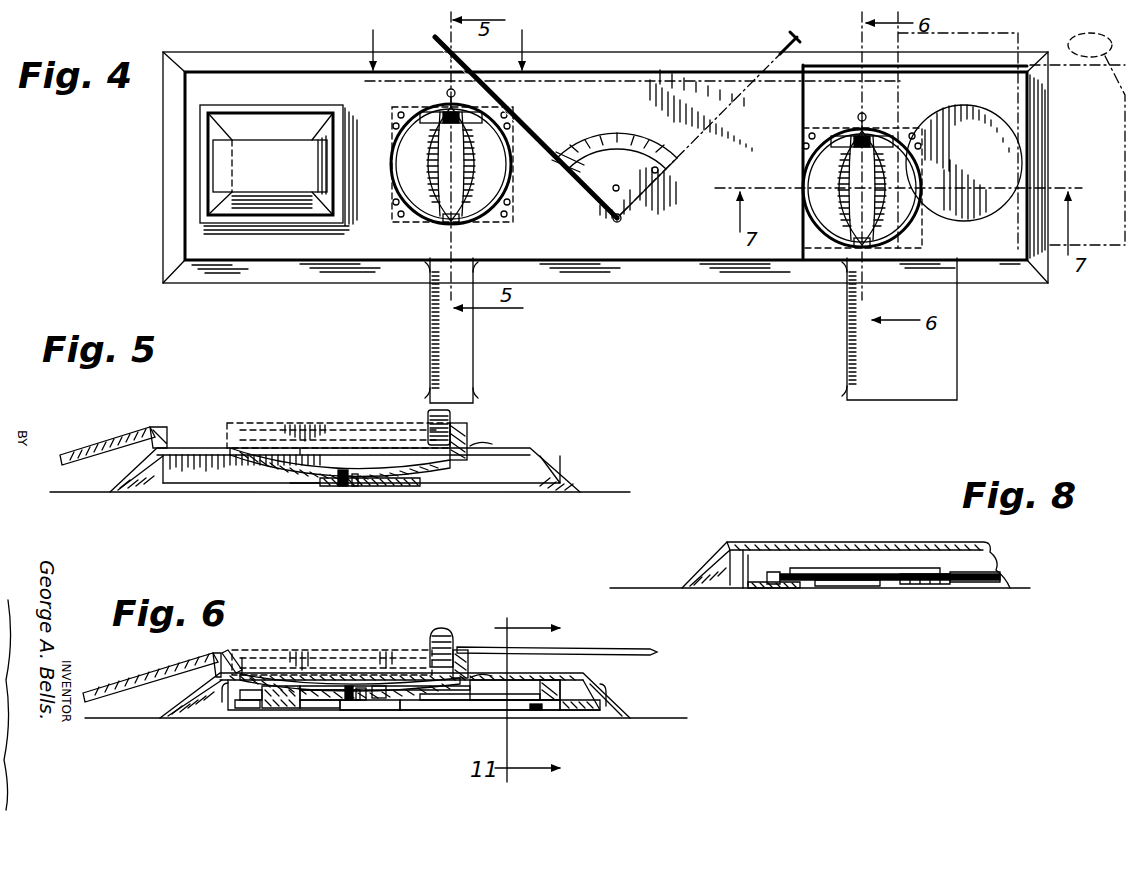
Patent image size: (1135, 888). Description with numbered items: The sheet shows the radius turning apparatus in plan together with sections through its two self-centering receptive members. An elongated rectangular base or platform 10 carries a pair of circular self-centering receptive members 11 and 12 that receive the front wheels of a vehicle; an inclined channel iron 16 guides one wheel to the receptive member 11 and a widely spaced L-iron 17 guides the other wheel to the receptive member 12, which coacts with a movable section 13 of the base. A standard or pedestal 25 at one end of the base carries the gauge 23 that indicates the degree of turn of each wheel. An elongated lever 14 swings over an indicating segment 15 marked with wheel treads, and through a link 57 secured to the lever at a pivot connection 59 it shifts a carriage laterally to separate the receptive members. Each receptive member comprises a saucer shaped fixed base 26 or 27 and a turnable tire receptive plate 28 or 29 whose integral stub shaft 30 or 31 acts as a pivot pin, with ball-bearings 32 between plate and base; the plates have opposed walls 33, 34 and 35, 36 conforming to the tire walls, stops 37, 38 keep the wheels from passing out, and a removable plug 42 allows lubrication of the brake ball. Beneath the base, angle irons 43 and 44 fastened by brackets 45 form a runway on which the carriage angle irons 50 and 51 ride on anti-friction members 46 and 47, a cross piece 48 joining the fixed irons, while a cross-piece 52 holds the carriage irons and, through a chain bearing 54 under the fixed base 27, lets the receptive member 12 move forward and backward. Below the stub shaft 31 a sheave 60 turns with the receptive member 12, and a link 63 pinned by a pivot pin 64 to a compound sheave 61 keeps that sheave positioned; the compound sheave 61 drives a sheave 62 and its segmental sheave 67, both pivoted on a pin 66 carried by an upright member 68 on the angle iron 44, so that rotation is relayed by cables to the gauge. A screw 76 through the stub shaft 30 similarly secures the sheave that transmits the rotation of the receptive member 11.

In FIG. 4, the base 10 is at (172, 209).
In FIG. 5, the base 10 is at (172, 452).
In FIG. 6, the base 10 is at (182, 696).
In FIG. 8, the base 10 is at (712, 562).
In FIG. 4, the receptive member 11 is at (437, 156).
In FIG. 5, the receptive member 11 is at (380, 422).
In FIG. 6, the receptive member 11 is at (475, 660).
In FIG. 4, the receptive member 12 is at (847, 156).
In FIG. 6, the receptive member 12 is at (462, 650).
In FIG. 4, the movable section 13 is at (814, 42).
In FIG. 4, the lever 14 is at (437, 44).
In FIG. 6, the lever 14 is at (612, 646).
In FIG. 4, the indicating segment 15 is at (613, 135).
In FIG. 4, the inclined channel iron 16 is at (478, 345).
In FIG. 5, the inclined channel iron 16 is at (70, 448).
In FIG. 4, the L-iron 17 is at (846, 355).
In FIG. 6, the L-iron 17 is at (110, 672).
In FIG. 4, the gauge 23 is at (274, 173).
In FIG. 4, the pedestal 25 is at (262, 120).
In FIG. 5, the fixed base 26 is at (290, 478).
In FIG. 6, the fixed base 27 is at (405, 690).
In FIG. 5, the tire receptive plate 28 is at (255, 452).
In FIG. 6, the tire receptive plate 29 is at (262, 676).
In FIG. 5, the stub shaft 30 is at (340, 486).
In FIG. 6, the stub shaft 31 is at (345, 712).
In FIG. 5, the ball-bearings 32 is at (467, 440).
In FIG. 6, the ball-bearings 32 is at (228, 653).
In FIG. 4, the opposed wall 33 is at (426, 164).
In FIG. 5, the opposed wall 33 is at (320, 423).
In FIG. 4, the opposed wall 34 is at (475, 178).
In FIG. 4, the opposed wall 35 is at (812, 232).
In FIG. 6, the opposed wall 35 is at (246, 658).
In FIG. 4, the opposed wall 36 is at (905, 232).
In FIG. 4, the stop 37 is at (432, 112).
In FIG. 5, the stop 37 is at (450, 422).
In FIG. 4, the stop 38 is at (852, 136).
In FIG. 6, the stop 38 is at (440, 628).
In FIG. 5, the removable plug 42 is at (500, 446).
In FIG. 6, the removable plug 42 is at (492, 676).
In FIG. 6, the angle iron 43 is at (268, 708).
In FIG. 6, the angle iron 44 is at (570, 712).
In FIG. 8, the angle iron 44 is at (770, 588).
In FIG. 6, the bracket 45 is at (215, 690).
In FIG. 8, the bracket 45 is at (737, 565).
In FIG. 6, the anti-friction member 46 is at (246, 702).
In FIG. 6, the anti-friction member 47 is at (538, 712).
In FIG. 6, the cross piece 48 is at (452, 712).
In FIG. 6, the angle iron 50 is at (237, 706).
In FIG. 6, the angle iron 51 is at (546, 688).
In FIG. 6, the cross-piece 52 is at (495, 702).
In FIG. 6, the chain bearing 54 is at (515, 690).
In FIG. 6, the link 57 is at (325, 706).
In FIG. 6, the pivot connection 59 is at (302, 710).
In FIG. 6, the sheave 60 is at (378, 702).
In FIG. 8, the compound sheave 61 is at (960, 572).
In FIG. 8, the sheave 62 is at (775, 572).
In FIG. 6, the link 63 is at (362, 704).
In FIG. 8, the pivot pin 64 is at (925, 572).
In FIG. 8, the pin 66 is at (812, 568).
In FIG. 8, the segmental sheave 67 is at (842, 586).
In FIG. 8, the upright member 68 is at (797, 582).
In FIG. 5, the screw 76 is at (356, 488).
In FIG. 6, the screw 76 is at (349, 702).